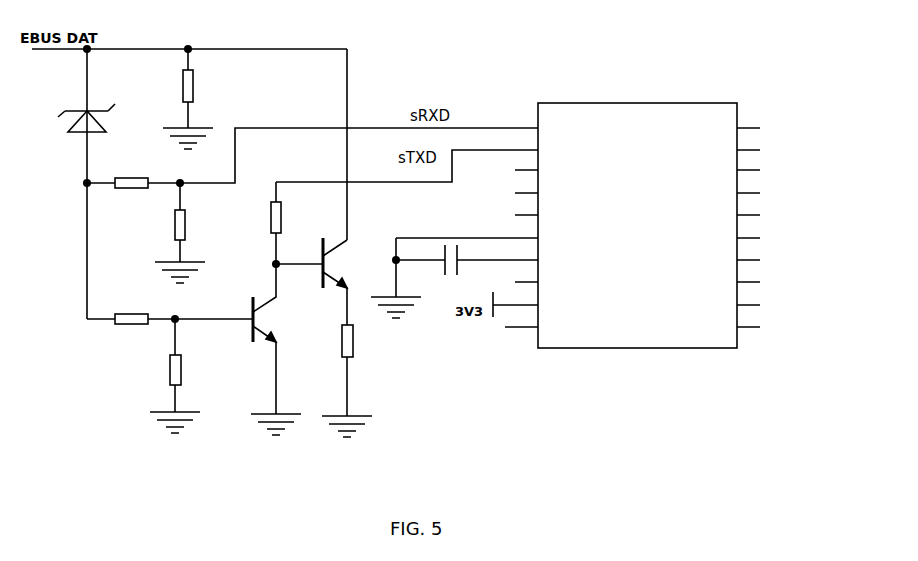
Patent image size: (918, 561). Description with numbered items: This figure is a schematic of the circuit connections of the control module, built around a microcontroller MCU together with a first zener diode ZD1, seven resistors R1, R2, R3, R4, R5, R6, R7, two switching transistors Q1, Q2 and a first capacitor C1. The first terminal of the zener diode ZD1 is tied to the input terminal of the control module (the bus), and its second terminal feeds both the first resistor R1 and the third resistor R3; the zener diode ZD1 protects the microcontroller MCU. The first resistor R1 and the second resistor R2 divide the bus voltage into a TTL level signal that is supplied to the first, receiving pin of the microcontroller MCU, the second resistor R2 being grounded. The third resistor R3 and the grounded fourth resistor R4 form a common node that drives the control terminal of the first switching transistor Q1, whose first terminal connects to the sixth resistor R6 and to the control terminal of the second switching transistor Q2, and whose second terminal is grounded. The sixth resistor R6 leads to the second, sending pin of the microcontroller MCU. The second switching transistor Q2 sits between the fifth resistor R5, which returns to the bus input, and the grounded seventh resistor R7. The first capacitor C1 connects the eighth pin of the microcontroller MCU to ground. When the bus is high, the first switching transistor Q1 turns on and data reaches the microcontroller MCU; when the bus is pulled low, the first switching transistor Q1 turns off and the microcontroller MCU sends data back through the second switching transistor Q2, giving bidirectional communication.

The first zener diode ZD1 is at (71, 128).
The first resistor R1 is at (312, 168).
The second resistor R2 is at (184, 246).
The third resistor R3 is at (170, 331).
The fourth resistor R4 is at (177, 391).
The fifth resistor R5 is at (189, 111).
The sixth resistor R6 is at (297, 225).
The seventh resistor R7 is at (341, 394).
The first switching transistor Q1 is at (268, 364).
The second switching transistor Q2 is at (344, 281).
The first capacitor C1 is at (454, 291).
The microcontroller MCU is at (642, 214).